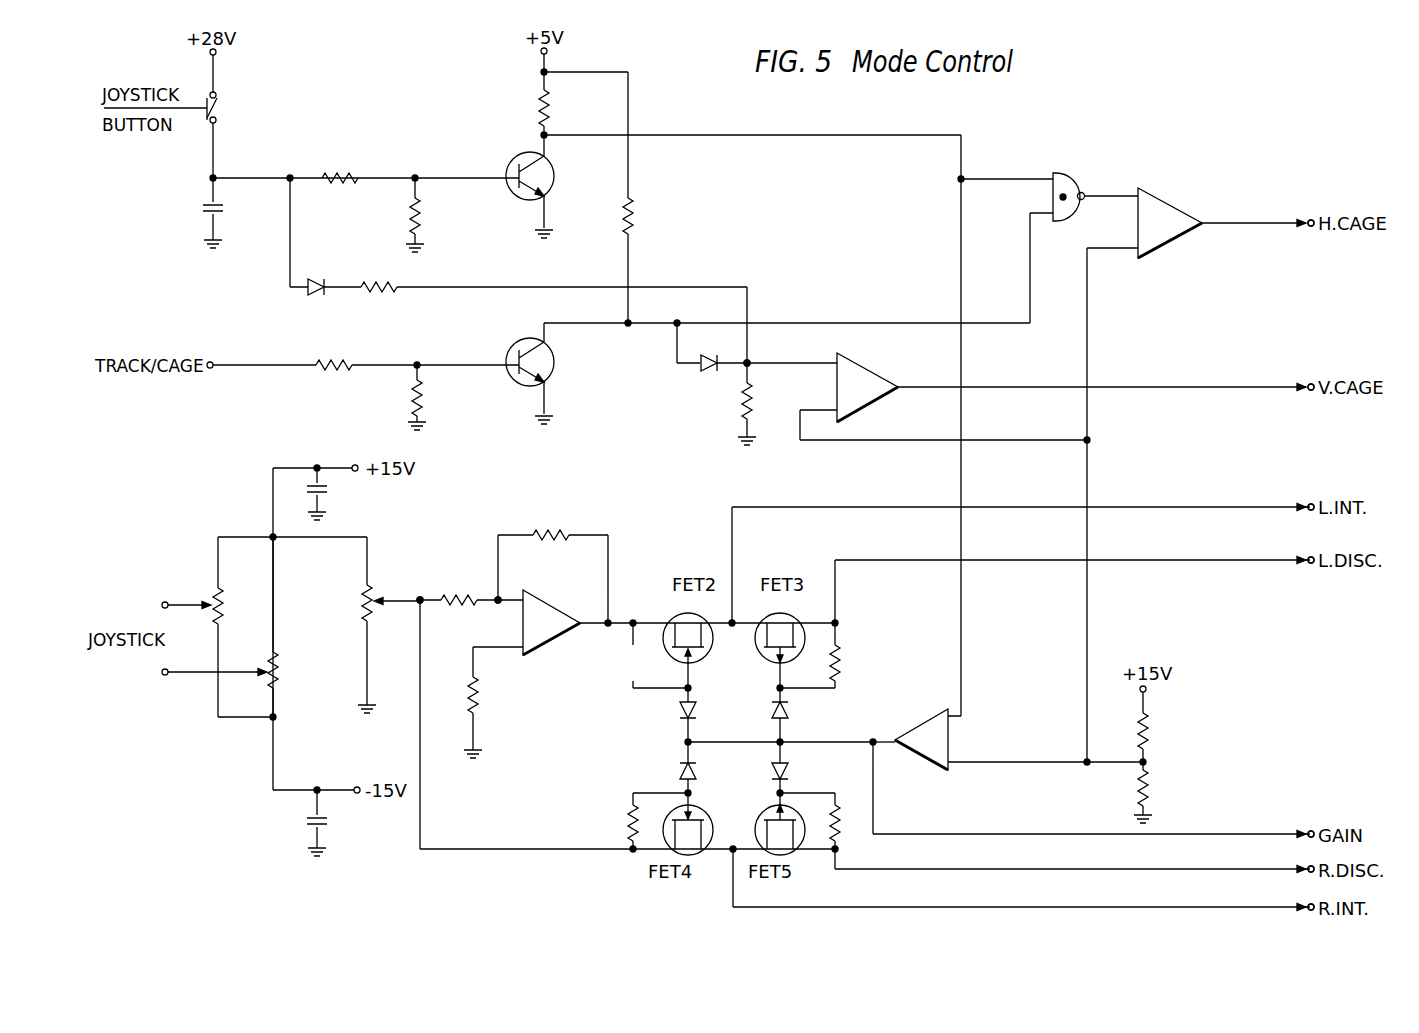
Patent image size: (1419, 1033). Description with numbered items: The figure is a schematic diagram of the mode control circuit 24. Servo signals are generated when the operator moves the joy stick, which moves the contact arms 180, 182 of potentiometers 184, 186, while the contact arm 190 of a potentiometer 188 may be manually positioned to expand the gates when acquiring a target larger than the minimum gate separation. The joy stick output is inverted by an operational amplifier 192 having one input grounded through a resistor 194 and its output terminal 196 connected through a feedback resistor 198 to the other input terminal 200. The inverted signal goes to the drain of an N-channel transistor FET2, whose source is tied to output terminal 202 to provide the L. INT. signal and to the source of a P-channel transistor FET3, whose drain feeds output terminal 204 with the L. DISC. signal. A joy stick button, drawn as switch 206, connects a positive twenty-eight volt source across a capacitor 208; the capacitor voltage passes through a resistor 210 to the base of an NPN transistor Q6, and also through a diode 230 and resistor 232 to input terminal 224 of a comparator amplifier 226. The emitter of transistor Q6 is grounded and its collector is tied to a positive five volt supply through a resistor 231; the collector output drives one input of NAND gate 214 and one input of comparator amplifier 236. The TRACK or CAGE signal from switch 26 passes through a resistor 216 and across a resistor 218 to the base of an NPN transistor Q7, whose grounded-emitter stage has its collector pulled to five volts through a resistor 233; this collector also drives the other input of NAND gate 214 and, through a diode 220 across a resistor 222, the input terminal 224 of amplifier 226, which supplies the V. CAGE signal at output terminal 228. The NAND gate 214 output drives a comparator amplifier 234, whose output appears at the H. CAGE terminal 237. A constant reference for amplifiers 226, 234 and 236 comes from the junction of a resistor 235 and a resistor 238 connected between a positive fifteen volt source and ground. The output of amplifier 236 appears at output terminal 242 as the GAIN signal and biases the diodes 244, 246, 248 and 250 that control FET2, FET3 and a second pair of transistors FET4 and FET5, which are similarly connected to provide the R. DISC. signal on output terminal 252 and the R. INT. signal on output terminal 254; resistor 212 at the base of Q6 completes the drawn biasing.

The mode control circuit 24 is at (660, 473).
The switch 26 is at (212, 369).
The contact arm 180 is at (167, 601).
The contact arm 182 is at (166, 675).
The potentiometer 184 is at (226, 600).
The potentiometer 186 is at (282, 667).
The potentiometer 188 is at (360, 597).
The contact arm 190 is at (424, 595).
The operational amplifier 192 is at (555, 645).
The resistor 194 is at (483, 698).
The output terminal 196 is at (608, 621).
The feedback resistor 198 is at (564, 532).
The input terminal 200 is at (502, 598).
The output terminal 202 is at (1304, 507).
The output terminal 204 is at (1306, 560).
The switch 206 is at (225, 96).
The capacitor 208 is at (224, 208).
The resistor 210 is at (354, 171).
The resistor 212 is at (425, 216).
The NAND gate 214 is at (1073, 188).
The resistor 216 is at (347, 360).
The resistor 218 is at (425, 402).
The diode 220 is at (698, 370).
The resistor 222 is at (749, 393).
The input terminal 224 is at (750, 360).
The comparator amplifier 226 is at (882, 370).
The output terminal 228 is at (1308, 385).
The diode 230 is at (312, 281).
The resistor 231 is at (534, 108).
The resistor 232 is at (395, 289).
The resistor 233 is at (635, 217).
The comparator amplifier 234 is at (1180, 208).
The resistor 235 is at (1152, 803).
The comparator amplifier 236 is at (926, 727).
The H.CAGE output terminal 237 is at (1308, 221).
The resistor 238 is at (1152, 747).
The output terminal 242 is at (1307, 834).
The diode 244 is at (698, 713).
The diode 246 is at (695, 773).
The diode 248 is at (790, 713).
The diode 250 is at (792, 773).
The output terminal 252 is at (1307, 871).
The output terminal 254 is at (1309, 907).
The NPN transistor Q6 is at (552, 178).
The NPN transistor Q7 is at (514, 350).
The N-channel field effect transistor FET2 is at (688, 613).
The P-channel field effect transistor FET3 is at (780, 613).
The field effect transistor FET4 is at (683, 855).
The field effect transistor FET5 is at (802, 854).